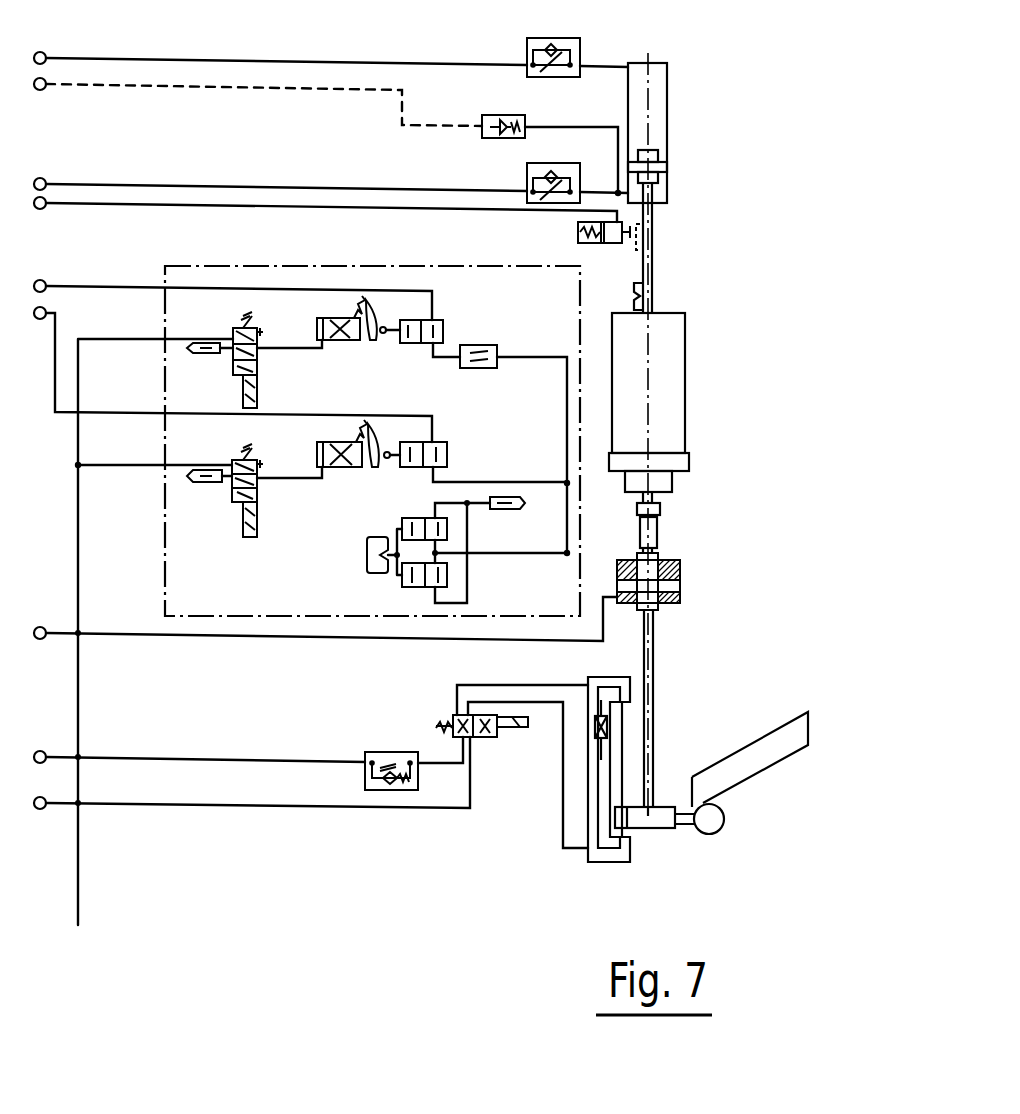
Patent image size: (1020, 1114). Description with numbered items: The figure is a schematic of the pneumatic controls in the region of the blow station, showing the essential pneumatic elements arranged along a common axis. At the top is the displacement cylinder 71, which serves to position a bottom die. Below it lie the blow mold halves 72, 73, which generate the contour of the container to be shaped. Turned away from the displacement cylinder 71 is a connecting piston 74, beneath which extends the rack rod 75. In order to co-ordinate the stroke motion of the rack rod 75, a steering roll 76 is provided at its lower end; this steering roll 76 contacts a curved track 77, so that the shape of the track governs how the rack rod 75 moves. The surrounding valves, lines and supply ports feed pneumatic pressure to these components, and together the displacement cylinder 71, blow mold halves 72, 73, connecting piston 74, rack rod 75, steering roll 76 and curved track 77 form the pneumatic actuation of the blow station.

The displacement cylinder 71 is at (658, 152).
The blow mold half 72 is at (623, 317).
The blow mold half 73 is at (672, 322).
The connecting piston 74 is at (678, 576).
The rack rod 75 is at (654, 646).
The steering roll 76 is at (718, 834).
The curved track 77 is at (760, 748).